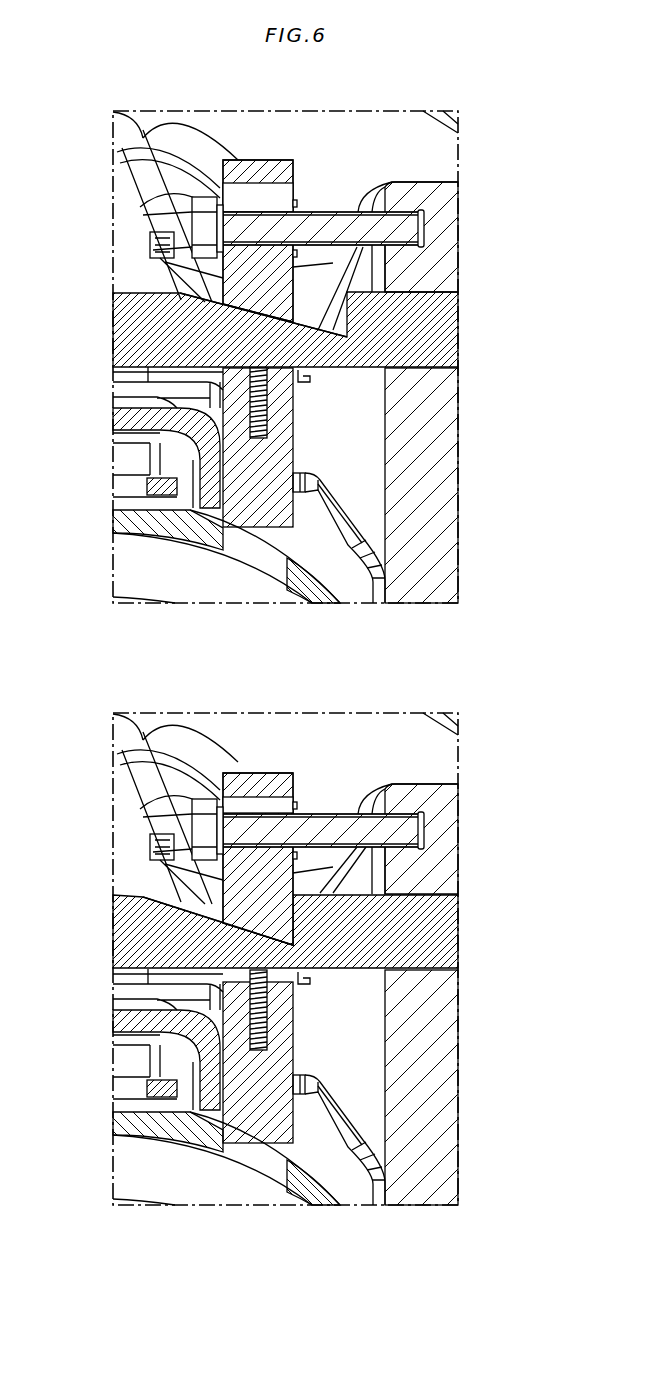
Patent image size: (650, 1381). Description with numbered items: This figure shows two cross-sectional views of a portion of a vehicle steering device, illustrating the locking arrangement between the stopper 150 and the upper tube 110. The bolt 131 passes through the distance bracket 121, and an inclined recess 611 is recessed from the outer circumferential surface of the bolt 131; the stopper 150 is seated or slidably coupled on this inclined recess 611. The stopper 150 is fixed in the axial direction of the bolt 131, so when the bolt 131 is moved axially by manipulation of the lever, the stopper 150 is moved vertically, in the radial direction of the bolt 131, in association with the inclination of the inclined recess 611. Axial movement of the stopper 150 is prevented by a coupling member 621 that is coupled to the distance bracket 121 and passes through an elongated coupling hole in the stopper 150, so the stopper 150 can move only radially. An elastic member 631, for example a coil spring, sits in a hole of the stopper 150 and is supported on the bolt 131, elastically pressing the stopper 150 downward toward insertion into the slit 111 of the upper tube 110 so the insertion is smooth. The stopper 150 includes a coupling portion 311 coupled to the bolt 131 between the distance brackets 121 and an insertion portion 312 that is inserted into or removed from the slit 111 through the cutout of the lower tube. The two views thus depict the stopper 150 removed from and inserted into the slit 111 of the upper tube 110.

The upper tube 110 is at (113, 530).
The slit 111 is at (247, 547).
The distance bracket 121 is at (433, 533).
The bolt 131 is at (125, 332).
The stopper 150 is at (243, 283).
The coupling portion 311 is at (266, 160).
The insertion portion 312 is at (267, 500).
The inclined recess 611 is at (325, 323).
The coupling member 621 is at (417, 228).
The elastic member 631 is at (250, 415).